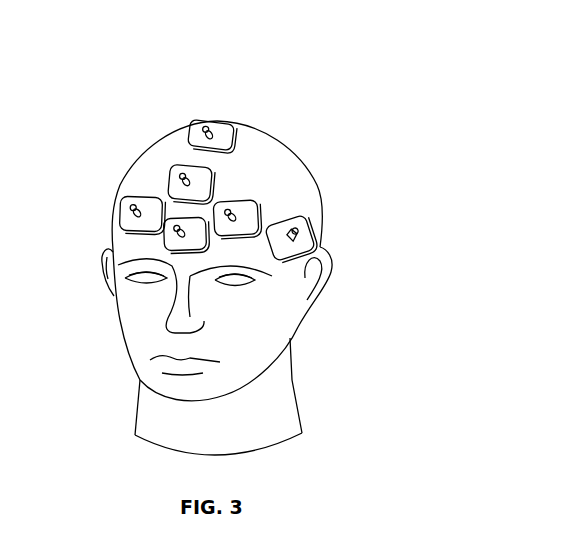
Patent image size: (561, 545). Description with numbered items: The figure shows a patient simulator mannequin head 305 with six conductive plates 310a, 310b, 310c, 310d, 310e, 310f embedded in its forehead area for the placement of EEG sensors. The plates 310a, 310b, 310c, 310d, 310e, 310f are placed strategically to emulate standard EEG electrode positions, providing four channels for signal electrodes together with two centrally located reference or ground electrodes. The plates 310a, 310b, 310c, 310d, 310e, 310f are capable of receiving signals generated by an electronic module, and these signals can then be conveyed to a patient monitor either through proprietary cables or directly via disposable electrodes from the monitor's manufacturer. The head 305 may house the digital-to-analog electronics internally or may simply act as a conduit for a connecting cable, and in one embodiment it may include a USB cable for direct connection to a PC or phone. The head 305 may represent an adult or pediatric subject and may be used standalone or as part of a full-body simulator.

The patient simulator mannequin head 305 is at (280, 152).
The conductive plate 310a is at (313, 243).
The conductive plate 310b is at (228, 203).
The conductive plate 310c is at (208, 120).
The conductive plate 310d is at (173, 165).
The conductive plate 310e is at (123, 197).
The conductive plate 310f is at (162, 240).